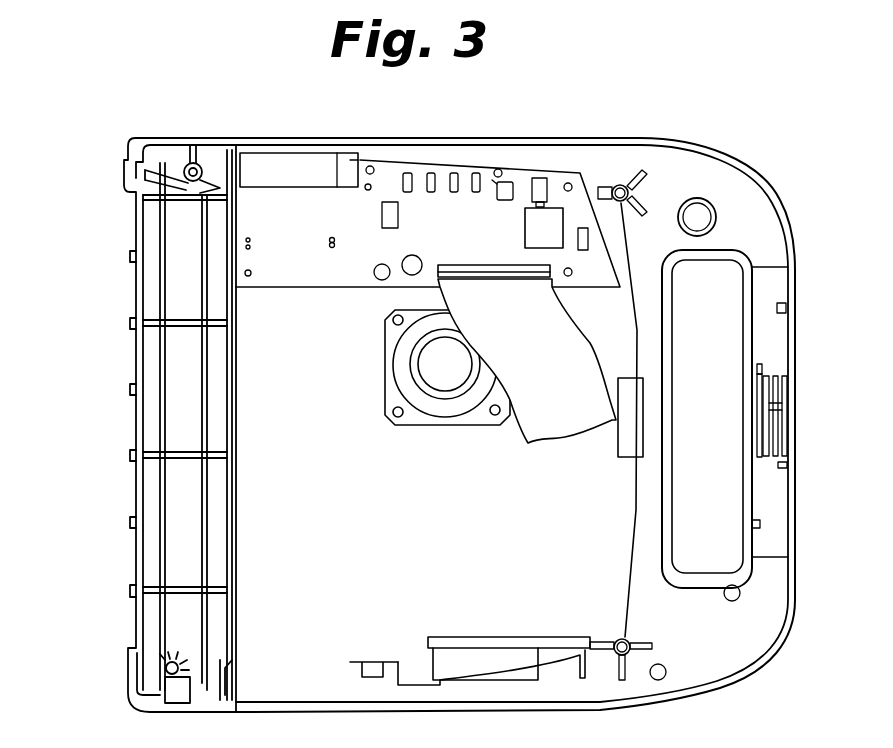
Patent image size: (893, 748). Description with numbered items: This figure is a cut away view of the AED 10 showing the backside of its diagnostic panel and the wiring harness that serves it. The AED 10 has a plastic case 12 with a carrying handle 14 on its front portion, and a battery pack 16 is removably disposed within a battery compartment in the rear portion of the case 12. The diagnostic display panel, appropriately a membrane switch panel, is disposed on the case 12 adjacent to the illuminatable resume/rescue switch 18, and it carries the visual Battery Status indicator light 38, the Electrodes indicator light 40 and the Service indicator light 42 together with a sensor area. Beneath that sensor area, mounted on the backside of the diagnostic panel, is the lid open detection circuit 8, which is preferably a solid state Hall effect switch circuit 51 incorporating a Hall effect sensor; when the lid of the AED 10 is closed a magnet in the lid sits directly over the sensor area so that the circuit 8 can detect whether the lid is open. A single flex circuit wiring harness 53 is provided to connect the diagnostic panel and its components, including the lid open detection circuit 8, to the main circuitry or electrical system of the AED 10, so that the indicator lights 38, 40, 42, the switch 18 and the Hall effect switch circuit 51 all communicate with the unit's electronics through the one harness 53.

The lid open detection circuit 8 is at (598, 169).
The AED 10 is at (740, 146).
The plastic case 12 is at (767, 218).
The carrying handle 14 is at (773, 344).
The battery pack 16 is at (147, 432).
The illuminatable resume/rescue switch 18 is at (508, 180).
The Battery Status indicator light 38 is at (402, 172).
The Electrodes indicator light 40 is at (452, 172).
The Service indicator light 42 is at (478, 172).
The Hall effect switch circuit 51 is at (548, 178).
The flex circuit wiring harness 53 is at (618, 423).